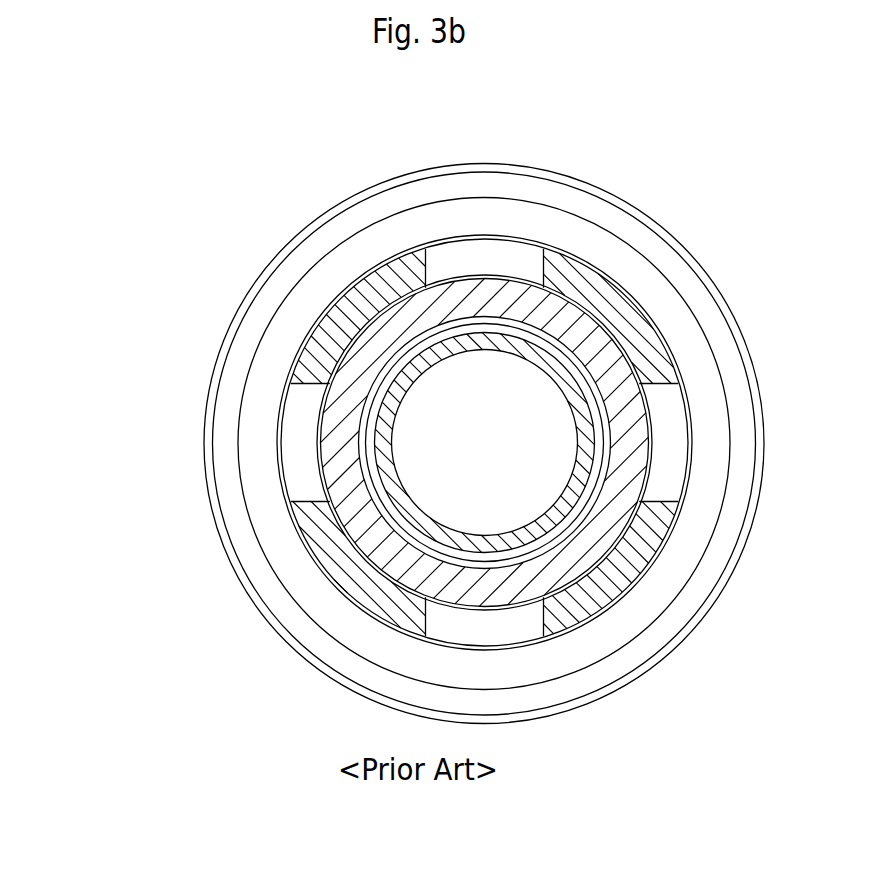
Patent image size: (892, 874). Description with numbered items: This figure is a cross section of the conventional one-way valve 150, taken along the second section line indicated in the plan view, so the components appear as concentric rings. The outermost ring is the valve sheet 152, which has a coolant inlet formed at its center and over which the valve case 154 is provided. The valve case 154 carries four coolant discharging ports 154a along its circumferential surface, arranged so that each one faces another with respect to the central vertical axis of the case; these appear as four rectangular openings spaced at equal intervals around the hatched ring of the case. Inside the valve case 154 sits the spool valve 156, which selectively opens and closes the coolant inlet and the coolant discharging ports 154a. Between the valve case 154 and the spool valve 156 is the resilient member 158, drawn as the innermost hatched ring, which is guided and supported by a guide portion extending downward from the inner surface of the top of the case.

The one-way valve 150 is at (332, 184).
The valve sheet 152 is at (232, 498).
The valve case 154 is at (347, 575).
The coolant discharging port 154a is at (293, 447).
The spool valve 156 is at (365, 355).
The resilient member 158 is at (365, 403).